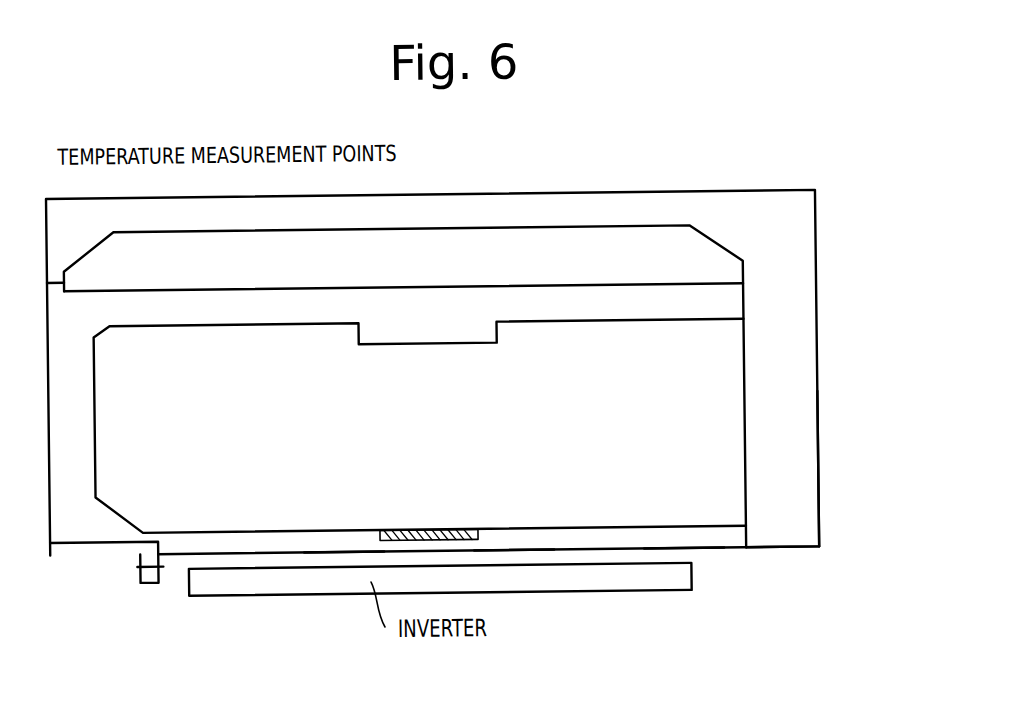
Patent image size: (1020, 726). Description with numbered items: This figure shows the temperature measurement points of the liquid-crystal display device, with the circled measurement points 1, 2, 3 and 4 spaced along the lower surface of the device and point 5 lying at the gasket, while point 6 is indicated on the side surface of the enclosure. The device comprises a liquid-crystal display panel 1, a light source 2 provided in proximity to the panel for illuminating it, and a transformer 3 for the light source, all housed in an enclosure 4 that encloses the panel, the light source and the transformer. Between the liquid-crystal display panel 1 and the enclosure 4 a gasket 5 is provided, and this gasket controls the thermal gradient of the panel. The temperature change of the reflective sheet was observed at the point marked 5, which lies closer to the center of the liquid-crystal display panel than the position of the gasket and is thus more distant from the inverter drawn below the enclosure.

The liquid-crystal display panel 1 is at (684, 537).
The light source 2 is at (514, 539).
The transformer 3 is at (344, 542).
The enclosure 4 is at (118, 558).
The gasket 5 is at (328, 493).
The side surface 6 is at (769, 556).